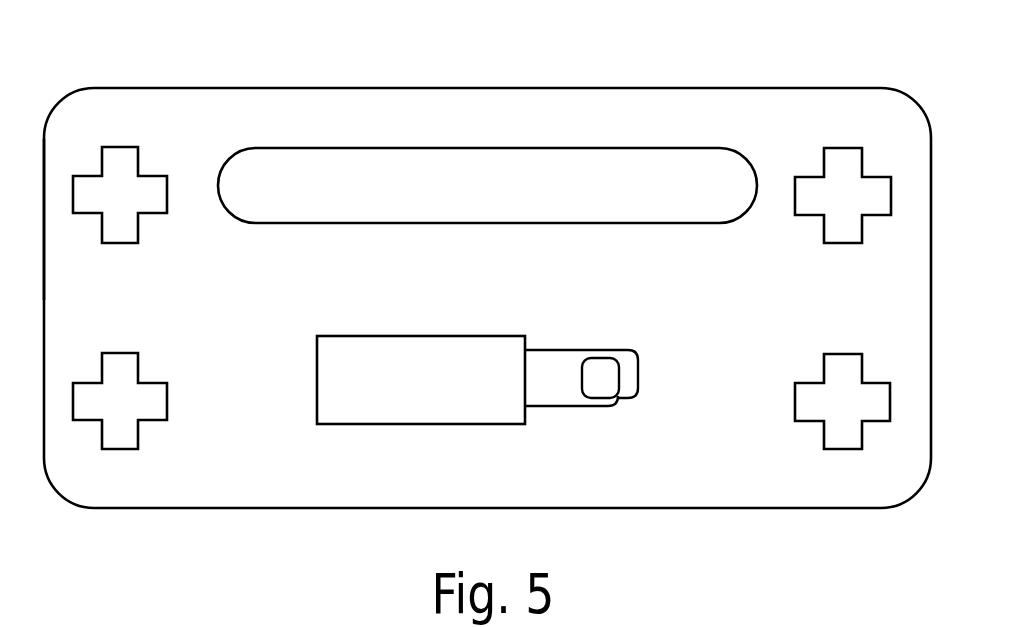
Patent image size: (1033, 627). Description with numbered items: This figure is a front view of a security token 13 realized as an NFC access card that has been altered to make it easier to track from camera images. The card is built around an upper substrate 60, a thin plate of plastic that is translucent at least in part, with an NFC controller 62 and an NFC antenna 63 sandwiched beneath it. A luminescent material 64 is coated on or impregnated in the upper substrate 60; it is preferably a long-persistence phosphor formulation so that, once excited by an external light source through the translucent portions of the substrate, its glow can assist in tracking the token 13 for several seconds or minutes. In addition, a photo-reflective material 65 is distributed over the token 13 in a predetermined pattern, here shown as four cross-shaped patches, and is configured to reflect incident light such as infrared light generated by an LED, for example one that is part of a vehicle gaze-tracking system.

The security token 13 is at (185, 88).
The upper substrate 60 is at (788, 112).
The NFC controller 62 is at (387, 334).
The NFC antenna 63 is at (610, 350).
The luminescent material 64 is at (610, 147).
The photo-reflective material 65 is at (130, 243).